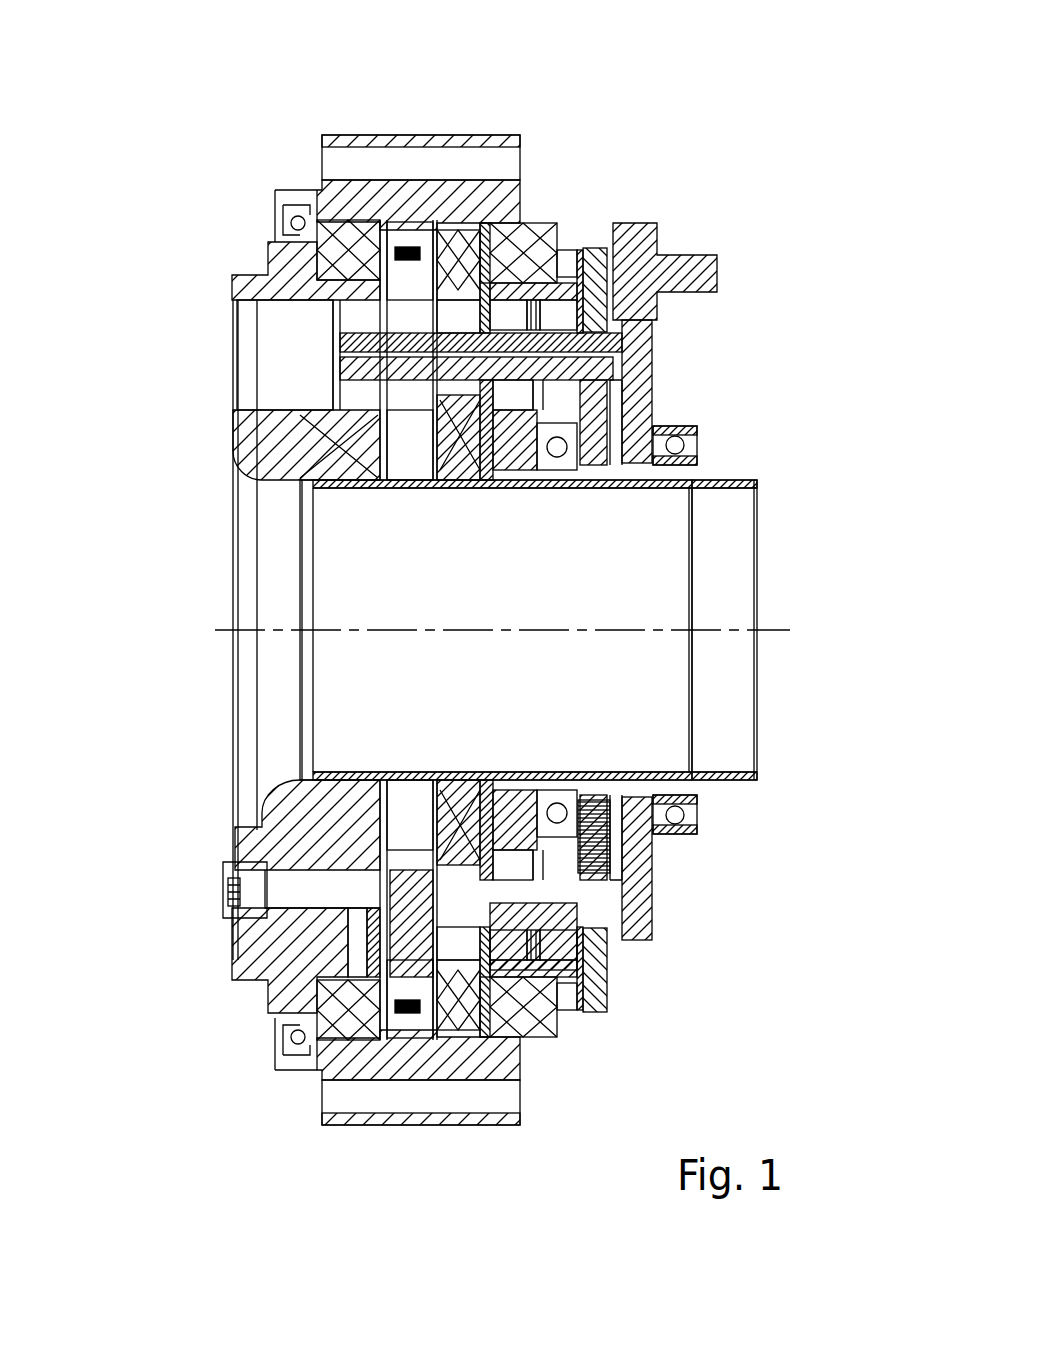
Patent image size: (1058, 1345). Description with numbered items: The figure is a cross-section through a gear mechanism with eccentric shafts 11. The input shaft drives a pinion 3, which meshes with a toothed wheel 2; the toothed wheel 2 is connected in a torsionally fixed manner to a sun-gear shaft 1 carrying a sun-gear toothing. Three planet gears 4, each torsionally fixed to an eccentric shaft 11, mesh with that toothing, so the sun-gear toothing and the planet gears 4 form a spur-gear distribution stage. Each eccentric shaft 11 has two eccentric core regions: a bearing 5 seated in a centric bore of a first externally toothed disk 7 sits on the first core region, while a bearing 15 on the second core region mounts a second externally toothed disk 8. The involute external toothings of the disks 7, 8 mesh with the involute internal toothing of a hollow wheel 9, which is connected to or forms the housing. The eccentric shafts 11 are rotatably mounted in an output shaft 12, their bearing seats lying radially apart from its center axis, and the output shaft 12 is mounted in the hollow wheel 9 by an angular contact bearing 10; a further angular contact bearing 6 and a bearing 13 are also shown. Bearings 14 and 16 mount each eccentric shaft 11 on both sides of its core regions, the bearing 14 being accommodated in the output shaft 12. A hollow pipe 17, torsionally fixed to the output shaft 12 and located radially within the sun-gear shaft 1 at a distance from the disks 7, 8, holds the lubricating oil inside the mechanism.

The sun-gear shaft 1 is at (690, 490).
The toothed wheel 2 is at (640, 368).
The pinion 3 is at (678, 267).
The planet gear 4 is at (595, 387).
The bearing 5 is at (548, 242).
The angular contact bearing 6 is at (517, 247).
The first externally toothed disk 7 is at (470, 245).
The second externally toothed disk 8 is at (413, 255).
The hollow wheel 9 is at (361, 200).
The angular contact bearing 10 is at (274, 233).
The eccentric shaft 11 is at (410, 340).
The output shaft 12 is at (290, 845).
The bearing 13 is at (600, 838).
The bearing for eccentric shaft 14 is at (362, 396).
The bearing for second disk 15 is at (413, 420).
The bearing for the eccentric shaft 16 is at (632, 487).
The hollow pipe 17 is at (740, 781).